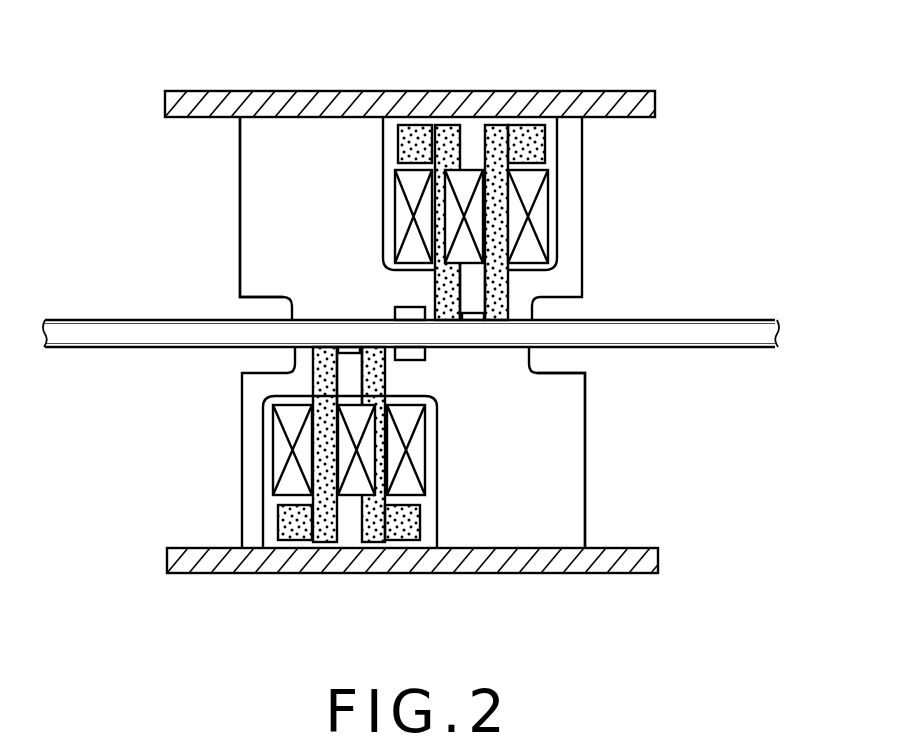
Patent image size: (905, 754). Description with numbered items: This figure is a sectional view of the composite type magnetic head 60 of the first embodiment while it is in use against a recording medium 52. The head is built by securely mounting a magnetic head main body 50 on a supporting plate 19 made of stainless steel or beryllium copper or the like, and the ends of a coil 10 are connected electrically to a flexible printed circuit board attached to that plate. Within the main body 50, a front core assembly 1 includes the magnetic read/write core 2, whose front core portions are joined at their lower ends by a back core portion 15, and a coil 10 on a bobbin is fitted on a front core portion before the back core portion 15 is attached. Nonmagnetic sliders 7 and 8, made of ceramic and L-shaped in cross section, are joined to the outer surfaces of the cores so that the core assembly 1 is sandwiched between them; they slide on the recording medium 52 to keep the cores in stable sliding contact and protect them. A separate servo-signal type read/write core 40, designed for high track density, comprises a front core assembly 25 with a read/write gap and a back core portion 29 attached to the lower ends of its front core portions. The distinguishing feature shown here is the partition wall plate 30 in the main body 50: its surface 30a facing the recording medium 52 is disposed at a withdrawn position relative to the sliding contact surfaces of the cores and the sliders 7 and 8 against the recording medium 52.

The front core assembly 1 is at (445, 130).
The magnetic read/write core 2 is at (375, 532).
The nonmagnetic slider 7 is at (560, 225).
The nonmagnetic slider 8 is at (238, 245).
The read/write coil 10 is at (470, 177).
The back core portion 15 is at (412, 133).
The supporting plate 19 is at (615, 90).
The front core assembly 25 is at (498, 132).
The back core portion 29 is at (535, 133).
The partition wall plate 30 is at (473, 298).
The surface of partition wall plate 30a is at (348, 347).
The read/write core 40 is at (325, 533).
The magnetic head main body 50 is at (238, 152).
The recording medium 52 is at (730, 343).
The composite type magnetic head 60 is at (308, 90).